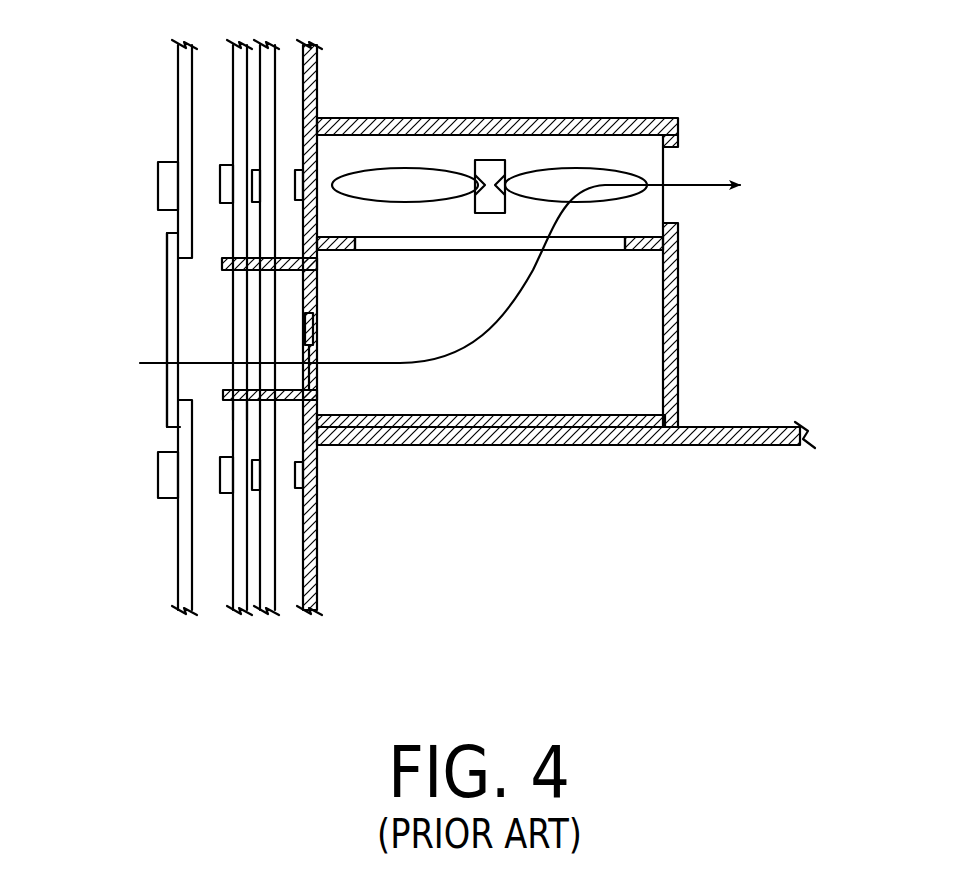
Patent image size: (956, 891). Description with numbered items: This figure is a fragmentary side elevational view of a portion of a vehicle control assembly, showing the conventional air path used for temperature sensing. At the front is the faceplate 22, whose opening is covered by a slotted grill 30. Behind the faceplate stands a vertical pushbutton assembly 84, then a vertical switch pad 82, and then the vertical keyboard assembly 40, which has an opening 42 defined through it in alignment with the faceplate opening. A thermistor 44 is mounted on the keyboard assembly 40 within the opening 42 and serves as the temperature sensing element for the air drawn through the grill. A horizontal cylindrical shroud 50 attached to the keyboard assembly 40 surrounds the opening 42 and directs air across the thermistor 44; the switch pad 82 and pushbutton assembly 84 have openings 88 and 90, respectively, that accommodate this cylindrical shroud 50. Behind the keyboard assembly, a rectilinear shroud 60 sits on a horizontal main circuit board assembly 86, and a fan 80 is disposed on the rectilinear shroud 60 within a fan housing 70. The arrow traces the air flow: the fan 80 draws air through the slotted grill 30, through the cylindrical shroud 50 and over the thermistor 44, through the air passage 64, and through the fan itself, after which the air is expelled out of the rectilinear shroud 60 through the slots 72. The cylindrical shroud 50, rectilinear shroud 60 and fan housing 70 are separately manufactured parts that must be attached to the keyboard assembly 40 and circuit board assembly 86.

The faceplate 22 is at (185, 573).
The slotted grill 30 is at (170, 328).
The keyboard assembly 40 is at (311, 565).
The opening 42 is at (312, 291).
The thermistor 44 is at (314, 332).
The cylindrical shroud 50 is at (267, 268).
The rectilinear shroud 60 is at (670, 352).
The air passage 64 is at (612, 335).
The fan housing 70 is at (617, 143).
The slots 72 is at (678, 160).
The fan 80 is at (548, 170).
The switch pad 82 is at (270, 588).
The pushbutton assembly 84 is at (240, 577).
The main circuit board assembly 86 is at (728, 445).
The opening 88 is at (258, 403).
The opening 90 is at (226, 404).